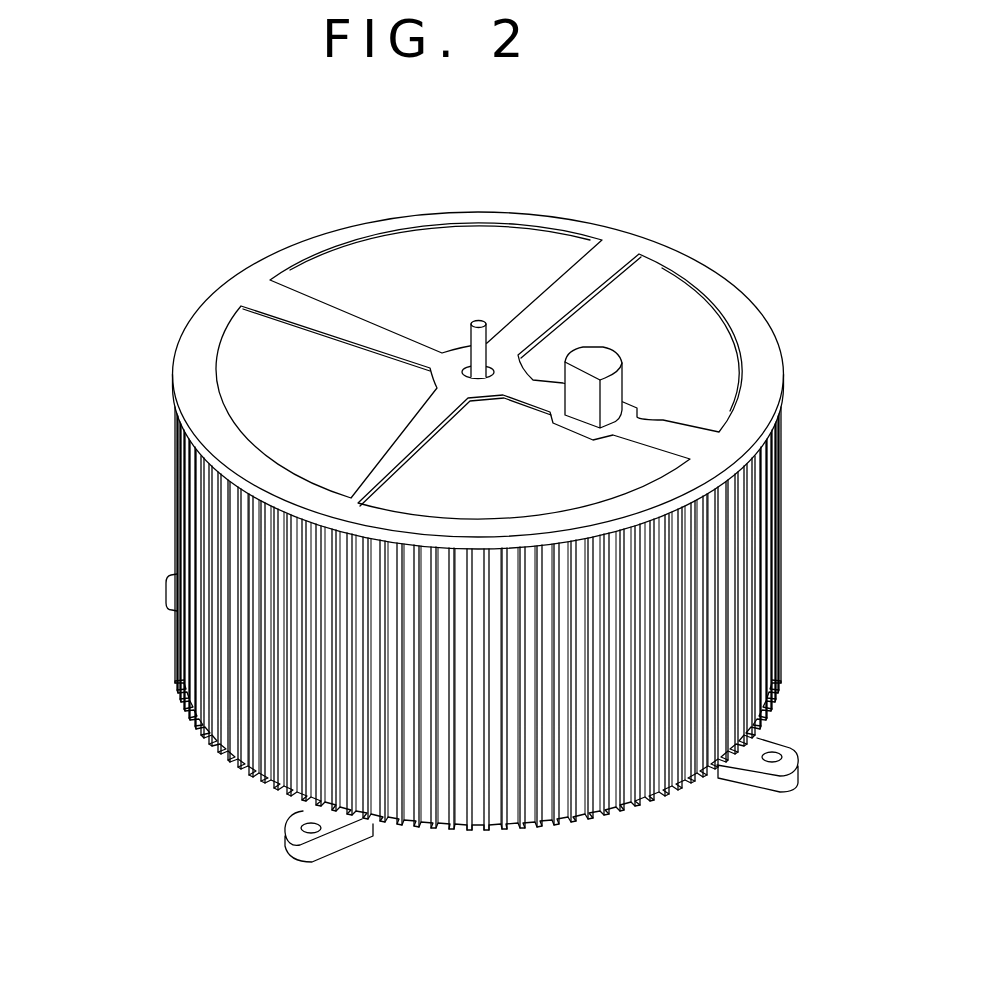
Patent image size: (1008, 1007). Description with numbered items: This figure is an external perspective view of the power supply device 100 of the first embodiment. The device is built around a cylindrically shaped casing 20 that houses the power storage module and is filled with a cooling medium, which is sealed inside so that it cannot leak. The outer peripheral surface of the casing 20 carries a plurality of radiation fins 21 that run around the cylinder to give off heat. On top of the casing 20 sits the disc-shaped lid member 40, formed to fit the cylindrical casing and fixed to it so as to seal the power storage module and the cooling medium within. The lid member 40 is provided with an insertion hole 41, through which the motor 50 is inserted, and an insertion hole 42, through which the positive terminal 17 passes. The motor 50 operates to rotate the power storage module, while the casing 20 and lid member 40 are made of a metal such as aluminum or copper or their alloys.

The power supply device 100 is at (116, 224).
The positive terminal 17 is at (484, 333).
The casing 20 is at (232, 758).
The radiation fins 21 is at (453, 817).
The lid member 40 is at (756, 299).
The insertion hole 41 is at (657, 421).
The insertion hole 42 is at (456, 366).
The motor 50 is at (607, 367).